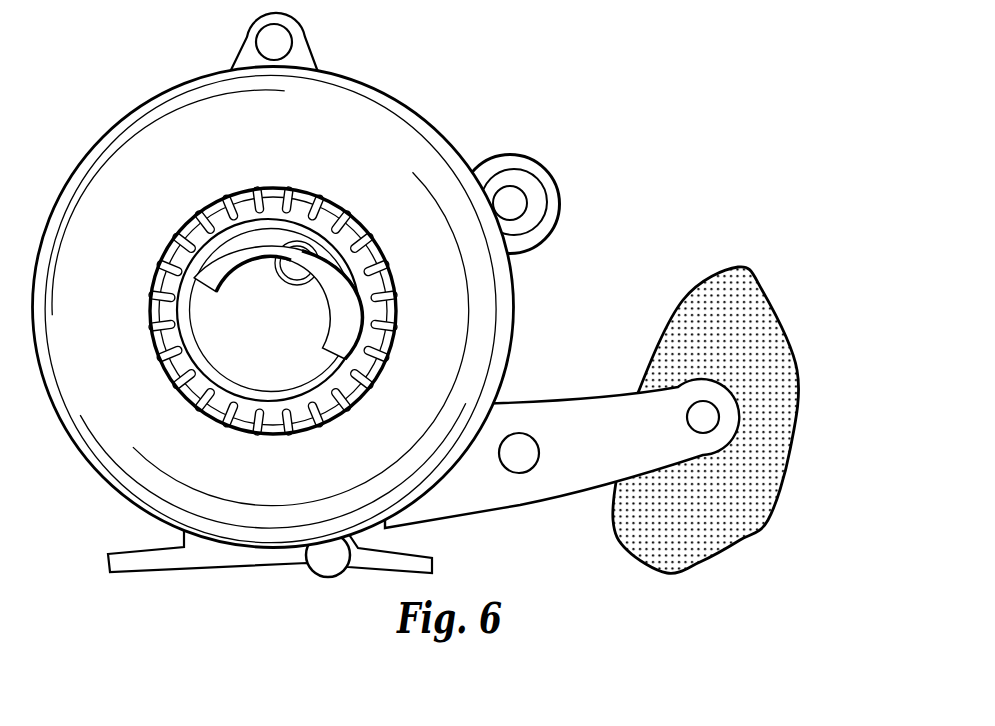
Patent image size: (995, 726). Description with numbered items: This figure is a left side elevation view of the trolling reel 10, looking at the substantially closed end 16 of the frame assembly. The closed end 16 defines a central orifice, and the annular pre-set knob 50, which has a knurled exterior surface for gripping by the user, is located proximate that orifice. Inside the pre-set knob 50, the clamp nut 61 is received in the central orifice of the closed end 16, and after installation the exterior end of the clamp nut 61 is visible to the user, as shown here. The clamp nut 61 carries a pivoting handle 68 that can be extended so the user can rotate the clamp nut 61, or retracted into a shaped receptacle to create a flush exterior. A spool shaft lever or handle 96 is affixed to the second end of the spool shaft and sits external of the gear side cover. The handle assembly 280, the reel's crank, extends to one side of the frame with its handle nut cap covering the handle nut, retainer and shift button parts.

The trolling reel 10 is at (518, 127).
The substantially closed end 16 is at (130, 107).
The annular pre-set knob 50 is at (303, 210).
The clamp nut 61 is at (240, 316).
The pivoting handle 68 is at (232, 247).
The spool shaft lever or handle 96 is at (557, 192).
The handle assembly 280 is at (553, 413).